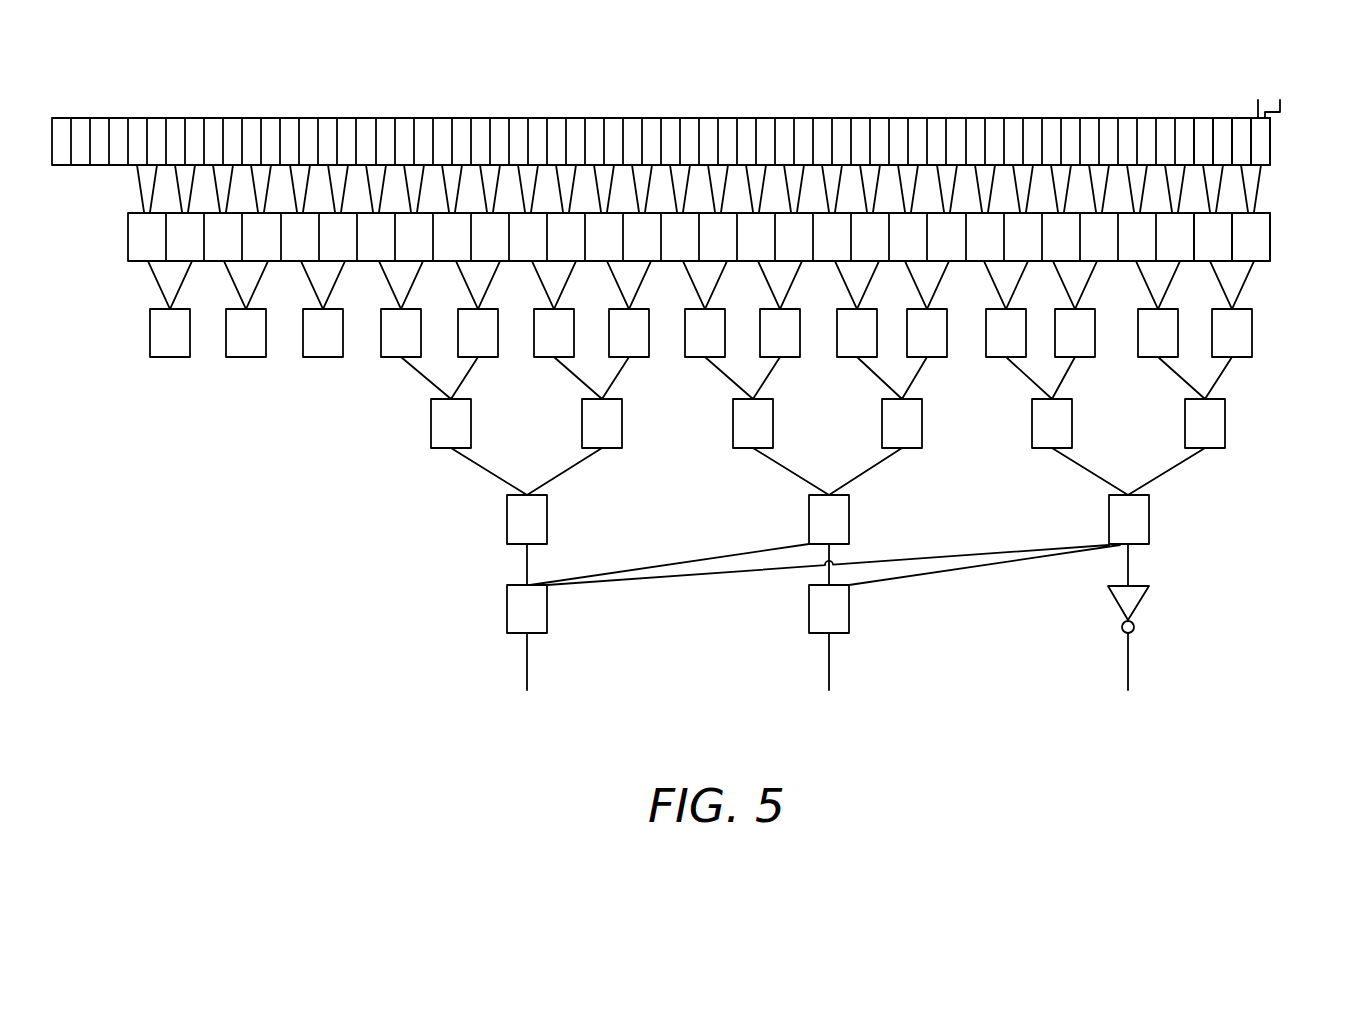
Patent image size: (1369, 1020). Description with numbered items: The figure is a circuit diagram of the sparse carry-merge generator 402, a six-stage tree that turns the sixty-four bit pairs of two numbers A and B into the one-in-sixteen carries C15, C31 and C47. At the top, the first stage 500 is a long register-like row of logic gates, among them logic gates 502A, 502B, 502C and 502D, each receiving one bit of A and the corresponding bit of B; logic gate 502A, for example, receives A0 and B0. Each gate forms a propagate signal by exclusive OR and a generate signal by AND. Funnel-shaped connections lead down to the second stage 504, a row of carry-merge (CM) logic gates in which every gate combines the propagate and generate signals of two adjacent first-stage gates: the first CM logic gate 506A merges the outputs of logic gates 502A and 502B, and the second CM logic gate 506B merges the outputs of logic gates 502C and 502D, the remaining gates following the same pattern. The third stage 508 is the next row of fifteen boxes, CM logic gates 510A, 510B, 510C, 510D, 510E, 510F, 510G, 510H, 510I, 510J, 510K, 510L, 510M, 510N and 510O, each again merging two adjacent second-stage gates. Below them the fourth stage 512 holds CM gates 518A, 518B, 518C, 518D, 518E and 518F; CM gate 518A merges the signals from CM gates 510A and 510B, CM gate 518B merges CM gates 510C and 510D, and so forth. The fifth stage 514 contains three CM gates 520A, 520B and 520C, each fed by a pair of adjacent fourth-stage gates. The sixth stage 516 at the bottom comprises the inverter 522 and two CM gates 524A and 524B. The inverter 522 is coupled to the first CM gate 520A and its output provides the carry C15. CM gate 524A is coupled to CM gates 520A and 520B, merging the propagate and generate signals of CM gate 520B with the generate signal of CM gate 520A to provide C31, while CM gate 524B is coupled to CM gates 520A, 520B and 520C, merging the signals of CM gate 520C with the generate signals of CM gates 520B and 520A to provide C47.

The sparse carry-merge generator 402 is at (206, 48).
The first stage 500 is at (1296, 137).
The logic gate 502A is at (1272, 158).
The logic gate 502B is at (1242, 118).
The logic gate 502C is at (1226, 118).
The logic gate 502D is at (1203, 118).
The second stage 504 is at (1296, 234).
The first CM logic gate 506A is at (1262, 213).
The second CM logic gate 506B is at (1196, 262).
The third stage 508 is at (748, 345).
The CM logic gate 510A is at (1236, 358).
The CM logic gate 510B is at (1154, 358).
The CM logic gate 510C is at (1078, 309).
The CM logic gate 510D is at (1004, 309).
The CM logic gate 510E is at (933, 357).
The CM logic gate 510F is at (850, 357).
The CM logic gate 510G is at (782, 309).
The CM logic gate 510H is at (703, 309).
The CM logic gate 510I is at (635, 357).
The CM logic gate 510J is at (550, 357).
The CM logic gate 510K is at (480, 309).
The CM logic gate 510L is at (401, 309).
The CM logic gate 510M is at (323, 357).
The CM logic gate 510N is at (246, 357).
The CM logic gate 510O is at (170, 357).
The fourth stage 512 is at (849, 441).
The CM gate 518A is at (1213, 448).
The CM gate 518B is at (1048, 448).
The CM gate 518C is at (907, 448).
The CM gate 518D is at (747, 448).
The CM gate 518E is at (604, 448).
The CM gate 518F is at (445, 448).
The fifth stage 514 is at (875, 523).
The first CM gate 520A is at (1148, 540).
The CM gate 520B is at (849, 520).
The CM gate 520C is at (547, 520).
The sixth stage 516 is at (866, 633).
The inverter 522 is at (1150, 588).
The CM gate 524A is at (849, 607).
The CM gate 524B is at (547, 608).